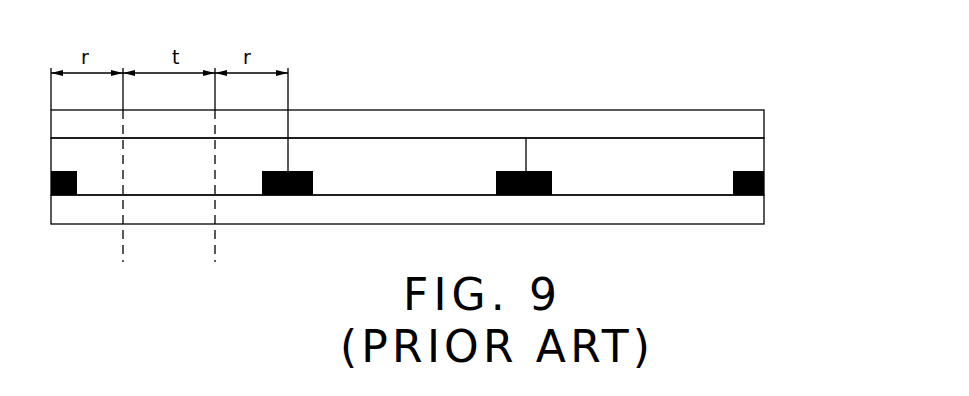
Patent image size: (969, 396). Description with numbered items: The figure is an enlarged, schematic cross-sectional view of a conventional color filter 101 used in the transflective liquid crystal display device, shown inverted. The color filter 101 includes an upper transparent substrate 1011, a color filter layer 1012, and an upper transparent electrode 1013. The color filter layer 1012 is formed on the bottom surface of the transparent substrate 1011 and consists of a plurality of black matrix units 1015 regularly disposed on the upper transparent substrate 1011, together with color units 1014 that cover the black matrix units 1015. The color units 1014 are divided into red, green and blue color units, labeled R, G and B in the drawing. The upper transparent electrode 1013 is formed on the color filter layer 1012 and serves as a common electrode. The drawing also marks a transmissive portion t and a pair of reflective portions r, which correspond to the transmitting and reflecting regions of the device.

The color filter 101 is at (500, 57).
The upper transparent substrate 1011 is at (752, 218).
The color filter layer 1012 is at (862, 146).
The upper transparent electrode 1013 is at (752, 127).
The color units 1014 is at (752, 160).
The black matrix units 1015 is at (762, 182).